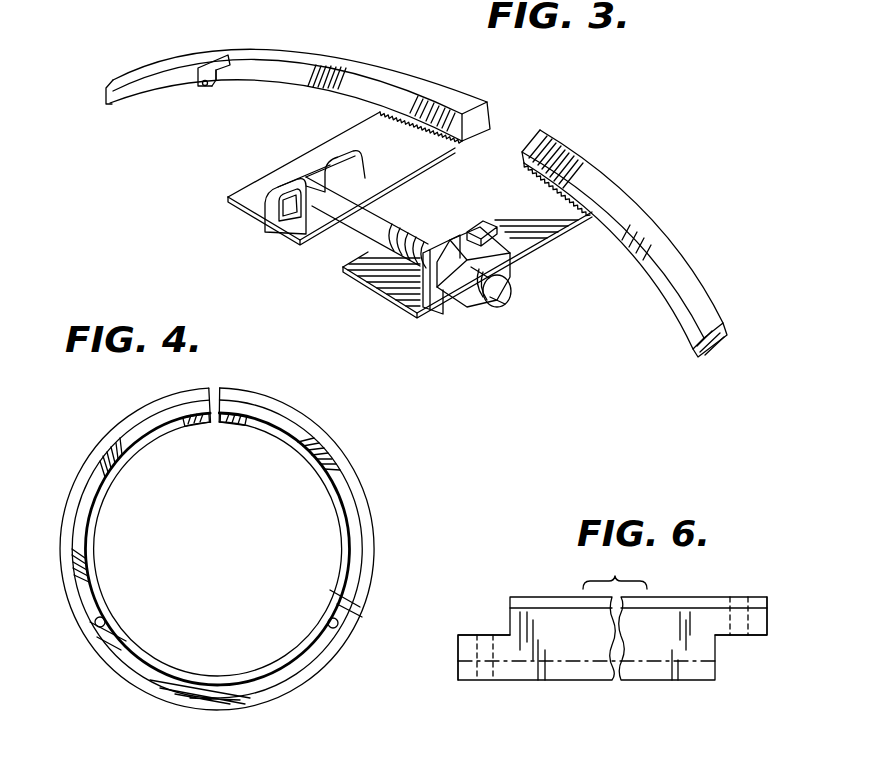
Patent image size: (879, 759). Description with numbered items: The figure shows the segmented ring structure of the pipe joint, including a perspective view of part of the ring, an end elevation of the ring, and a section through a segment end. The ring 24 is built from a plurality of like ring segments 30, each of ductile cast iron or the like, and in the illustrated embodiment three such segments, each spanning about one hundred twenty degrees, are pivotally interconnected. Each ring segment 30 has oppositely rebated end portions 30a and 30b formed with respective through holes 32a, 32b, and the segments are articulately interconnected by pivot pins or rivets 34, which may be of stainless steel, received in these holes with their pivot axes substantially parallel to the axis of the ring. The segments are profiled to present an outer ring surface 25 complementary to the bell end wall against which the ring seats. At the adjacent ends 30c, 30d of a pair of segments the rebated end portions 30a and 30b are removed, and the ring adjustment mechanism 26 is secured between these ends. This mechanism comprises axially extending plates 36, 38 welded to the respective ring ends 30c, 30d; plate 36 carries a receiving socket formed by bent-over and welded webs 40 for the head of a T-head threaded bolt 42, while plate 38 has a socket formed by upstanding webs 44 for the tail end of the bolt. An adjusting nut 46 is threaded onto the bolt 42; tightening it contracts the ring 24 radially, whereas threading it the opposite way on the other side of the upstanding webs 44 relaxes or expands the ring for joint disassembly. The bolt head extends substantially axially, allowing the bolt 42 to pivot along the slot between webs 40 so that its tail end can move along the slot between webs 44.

In FIG. 3, the ring 24 is at (291, 44).
In FIG. 4, the ring 24 is at (385, 564).
In FIG. 3, the outer ring surface 25 is at (357, 80).
In FIG. 3, the ring adjustment mechanism 26 is at (219, 169).
In FIG. 3, the ring segment 30 is at (138, 72).
In FIG. 4, the ring segment 30 is at (366, 464).
In FIG. 6, the ring segment 30 is at (637, 691).
In FIG. 3, the rebated end portion 30a is at (218, 73).
In FIG. 6, the rebated end portion 30a is at (458, 652).
In FIG. 3, the rebated end portion 30b is at (205, 62).
In FIG. 6, the rebated end portion 30b is at (767, 618).
In FIG. 3, the ring end 30c is at (467, 107).
In FIG. 4, the ring end 30c is at (197, 400).
In FIG. 3, the ring end 30d is at (583, 172).
In FIG. 4, the ring end 30d is at (233, 400).
In FIG. 6, the through hole 32a is at (483, 632).
In FIG. 6, the through hole 32b is at (738, 643).
In FIG. 3, the pivot pin 34 is at (207, 85).
In FIG. 4, the pivot pin 34 is at (92, 626).
In FIG. 3, the plate 36 is at (360, 130).
In FIG. 4, the plate 36 is at (192, 427).
In FIG. 3, the plate 38 is at (553, 218).
In FIG. 4, the plate 38 is at (240, 427).
In FIG. 3, the bent-over and welded webs 40 is at (338, 157).
In FIG. 3, the T-head threaded bolt 42 is at (377, 210).
In FIG. 3, the upstanding webs 44 is at (476, 225).
In FIG. 3, the adjusting nut 46 is at (505, 262).